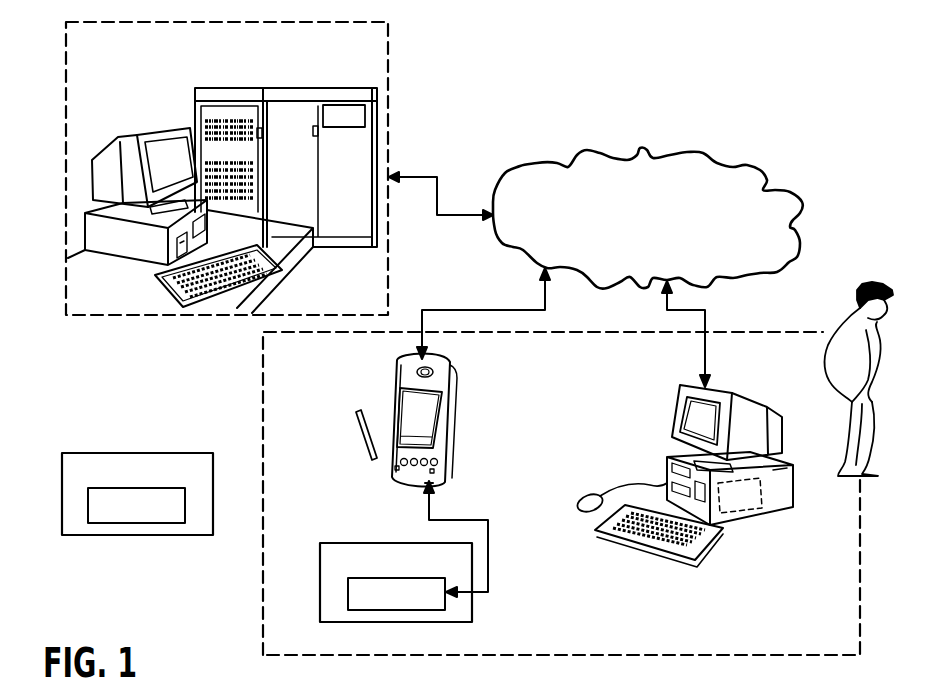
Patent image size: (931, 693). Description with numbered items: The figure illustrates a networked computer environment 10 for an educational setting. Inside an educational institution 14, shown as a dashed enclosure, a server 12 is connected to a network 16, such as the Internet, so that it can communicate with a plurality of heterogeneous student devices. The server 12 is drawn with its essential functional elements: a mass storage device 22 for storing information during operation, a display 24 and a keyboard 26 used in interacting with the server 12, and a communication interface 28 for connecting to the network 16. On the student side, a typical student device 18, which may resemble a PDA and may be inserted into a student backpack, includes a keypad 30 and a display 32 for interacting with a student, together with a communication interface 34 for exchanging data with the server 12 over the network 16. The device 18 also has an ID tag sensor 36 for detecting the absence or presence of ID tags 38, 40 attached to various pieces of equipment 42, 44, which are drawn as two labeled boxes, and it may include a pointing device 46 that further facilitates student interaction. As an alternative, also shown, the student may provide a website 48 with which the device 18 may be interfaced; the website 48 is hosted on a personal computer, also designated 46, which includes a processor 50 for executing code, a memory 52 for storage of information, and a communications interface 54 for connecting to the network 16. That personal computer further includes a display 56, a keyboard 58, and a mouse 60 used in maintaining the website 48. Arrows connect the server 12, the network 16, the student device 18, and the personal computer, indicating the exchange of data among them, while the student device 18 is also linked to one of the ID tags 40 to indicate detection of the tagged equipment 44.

The networked computer environment 10 is at (466, 327).
The server 12 is at (276, 150).
The educational institution 14 is at (88, 20).
The network 16 is at (658, 231).
The student device 18 is at (430, 431).
The mass storage device 22 is at (323, 115).
The display 24 is at (122, 140).
The keyboard 26 is at (158, 290).
The communication interface 28 is at (205, 238).
The keypad 30 is at (432, 468).
The display 32 is at (408, 413).
The communication interface 34 is at (418, 359).
The ID tag sensor 36 is at (440, 483).
The ID tag 38 is at (118, 535).
The ID tag 40 is at (368, 622).
The equipment 42 is at (126, 490).
The equipment 44 is at (385, 580).
The pointing device 46 is at (360, 432).
The website 48 is at (690, 418).
The processor 50 is at (752, 500).
The memory 52 is at (733, 515).
The communications interface 54 is at (788, 466).
The display 56 is at (732, 423).
The keyboard 58 is at (625, 542).
The mouse 60 is at (584, 498).